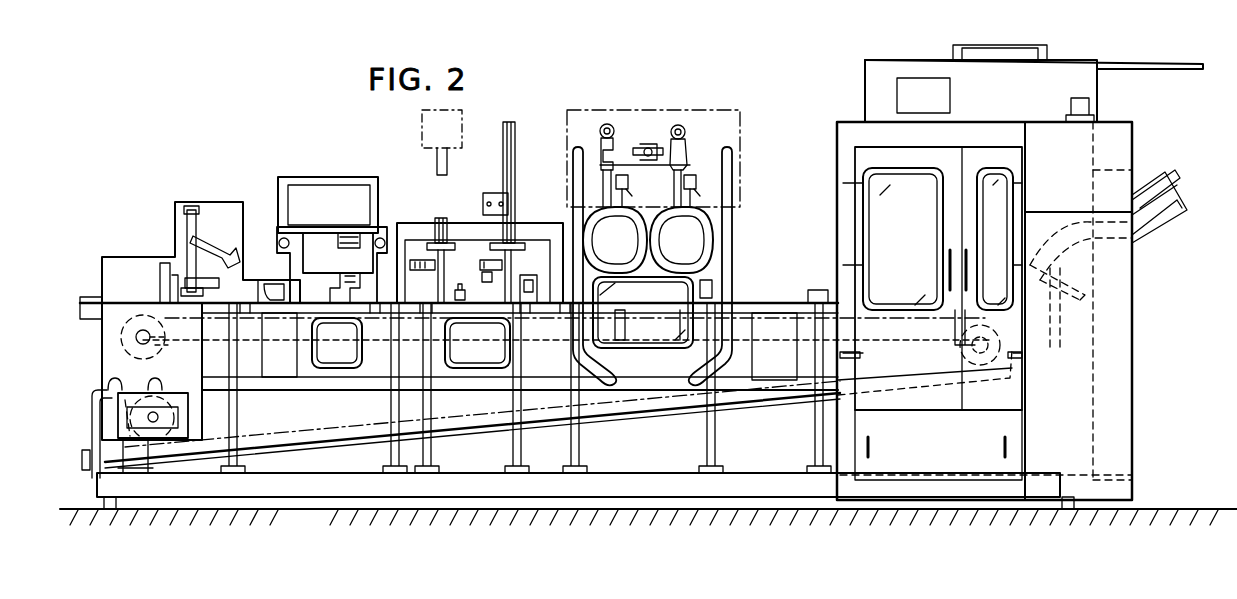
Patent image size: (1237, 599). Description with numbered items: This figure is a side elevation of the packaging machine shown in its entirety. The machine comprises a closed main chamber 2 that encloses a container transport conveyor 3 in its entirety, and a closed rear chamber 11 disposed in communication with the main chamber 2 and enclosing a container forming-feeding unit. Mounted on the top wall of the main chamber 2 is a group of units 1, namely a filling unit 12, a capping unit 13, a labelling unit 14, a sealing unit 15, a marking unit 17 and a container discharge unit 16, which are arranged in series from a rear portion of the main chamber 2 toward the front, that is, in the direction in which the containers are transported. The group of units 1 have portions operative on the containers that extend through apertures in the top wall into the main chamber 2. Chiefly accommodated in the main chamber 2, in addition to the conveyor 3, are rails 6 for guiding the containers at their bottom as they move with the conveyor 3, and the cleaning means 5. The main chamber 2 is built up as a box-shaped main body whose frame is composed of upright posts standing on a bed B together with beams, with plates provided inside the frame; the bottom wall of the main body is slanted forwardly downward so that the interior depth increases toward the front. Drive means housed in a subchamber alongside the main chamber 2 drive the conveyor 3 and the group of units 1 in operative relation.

The packaging machine 1 is at (316, 106).
The hopper / feed box 2 is at (116, 282).
The drive motor 3 is at (128, 374).
The filling station frame 5 is at (732, 278).
The conveyor pulley 6 is at (170, 327).
The cabinet unit 11 is at (868, 96).
The filling nozzles 12 is at (600, 128).
The vertical column device 13 is at (514, 172).
The plunger rod 14 is at (432, 235).
The pressing station 15 is at (358, 228).
The lever device 16 is at (196, 225).
The cup holder 17 is at (272, 296).
The base B is at (318, 497).